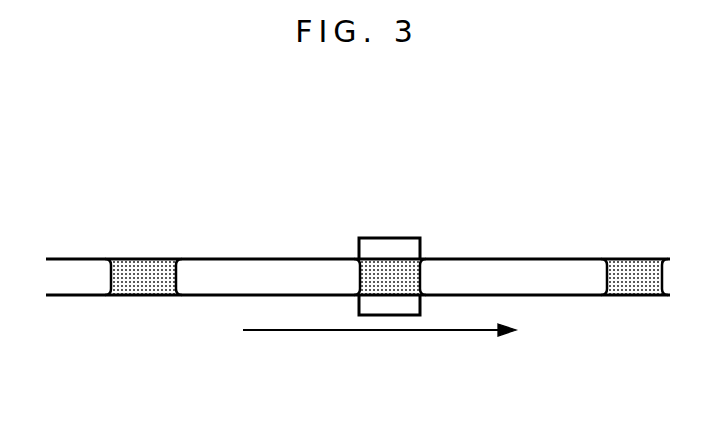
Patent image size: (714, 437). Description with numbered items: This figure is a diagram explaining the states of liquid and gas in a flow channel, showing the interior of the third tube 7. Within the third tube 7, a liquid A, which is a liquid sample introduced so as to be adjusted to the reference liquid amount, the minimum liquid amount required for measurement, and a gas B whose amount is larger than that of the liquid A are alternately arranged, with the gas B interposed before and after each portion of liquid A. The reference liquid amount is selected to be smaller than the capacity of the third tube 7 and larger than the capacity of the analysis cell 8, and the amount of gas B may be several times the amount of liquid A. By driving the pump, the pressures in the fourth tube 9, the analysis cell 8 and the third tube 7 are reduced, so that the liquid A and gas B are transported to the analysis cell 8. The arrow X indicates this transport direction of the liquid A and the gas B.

The third tube 7 is at (65, 258).
The analysis cell 8 is at (383, 236).
The fourth tube 9 is at (517, 258).
The liquid A is at (150, 268).
The gas B is at (92, 268).
The arrow X is at (310, 331).